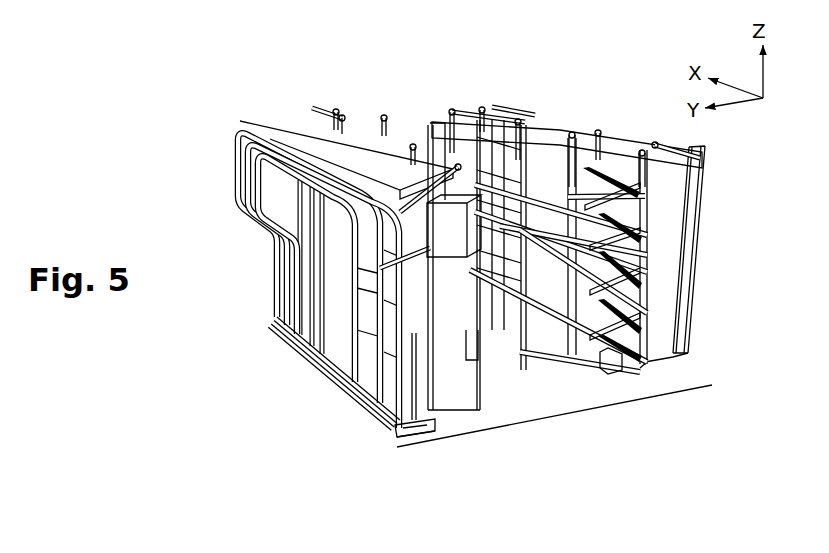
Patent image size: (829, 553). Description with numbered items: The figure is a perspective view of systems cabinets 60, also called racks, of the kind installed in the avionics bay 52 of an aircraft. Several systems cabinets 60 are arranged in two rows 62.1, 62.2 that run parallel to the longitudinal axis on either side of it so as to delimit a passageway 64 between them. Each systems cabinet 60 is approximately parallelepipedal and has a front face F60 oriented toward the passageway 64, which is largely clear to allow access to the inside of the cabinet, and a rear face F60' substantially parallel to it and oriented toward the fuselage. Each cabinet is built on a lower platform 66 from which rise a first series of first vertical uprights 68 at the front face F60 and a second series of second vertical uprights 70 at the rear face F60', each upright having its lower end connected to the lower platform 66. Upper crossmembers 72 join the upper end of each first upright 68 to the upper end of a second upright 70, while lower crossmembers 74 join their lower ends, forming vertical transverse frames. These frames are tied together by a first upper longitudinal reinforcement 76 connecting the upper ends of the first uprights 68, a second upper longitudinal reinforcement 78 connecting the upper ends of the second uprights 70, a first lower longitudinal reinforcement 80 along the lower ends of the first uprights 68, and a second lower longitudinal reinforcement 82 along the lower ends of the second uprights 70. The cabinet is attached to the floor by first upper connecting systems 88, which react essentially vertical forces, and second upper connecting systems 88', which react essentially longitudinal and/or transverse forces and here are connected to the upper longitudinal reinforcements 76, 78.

The avionics bay 52 is at (553, 417).
The systems cabinet 60 is at (366, 150).
The first row of systems cabinets 62.1 is at (425, 427).
The second row of systems cabinets 62.2 is at (653, 365).
The passageway 64 is at (514, 242).
The lower platform 66 is at (620, 362).
The first vertical uprights 68 is at (548, 272).
The second vertical uprights 70 is at (343, 377).
The upper crossmembers 72 is at (432, 196).
The lower crossmembers 74 is at (453, 422).
The first upper longitudinal reinforcement 76 is at (617, 150).
The second upper longitudinal reinforcement 78 is at (277, 130).
The first lower longitudinal reinforcement 80 is at (525, 310).
The second lower longitudinal reinforcement 82 is at (392, 418).
The first upper connecting system 88 is at (516, 146).
The second upper connecting system 88' is at (386, 76).
The front face F60 is at (513, 268).
The rear face F60' is at (502, 249).